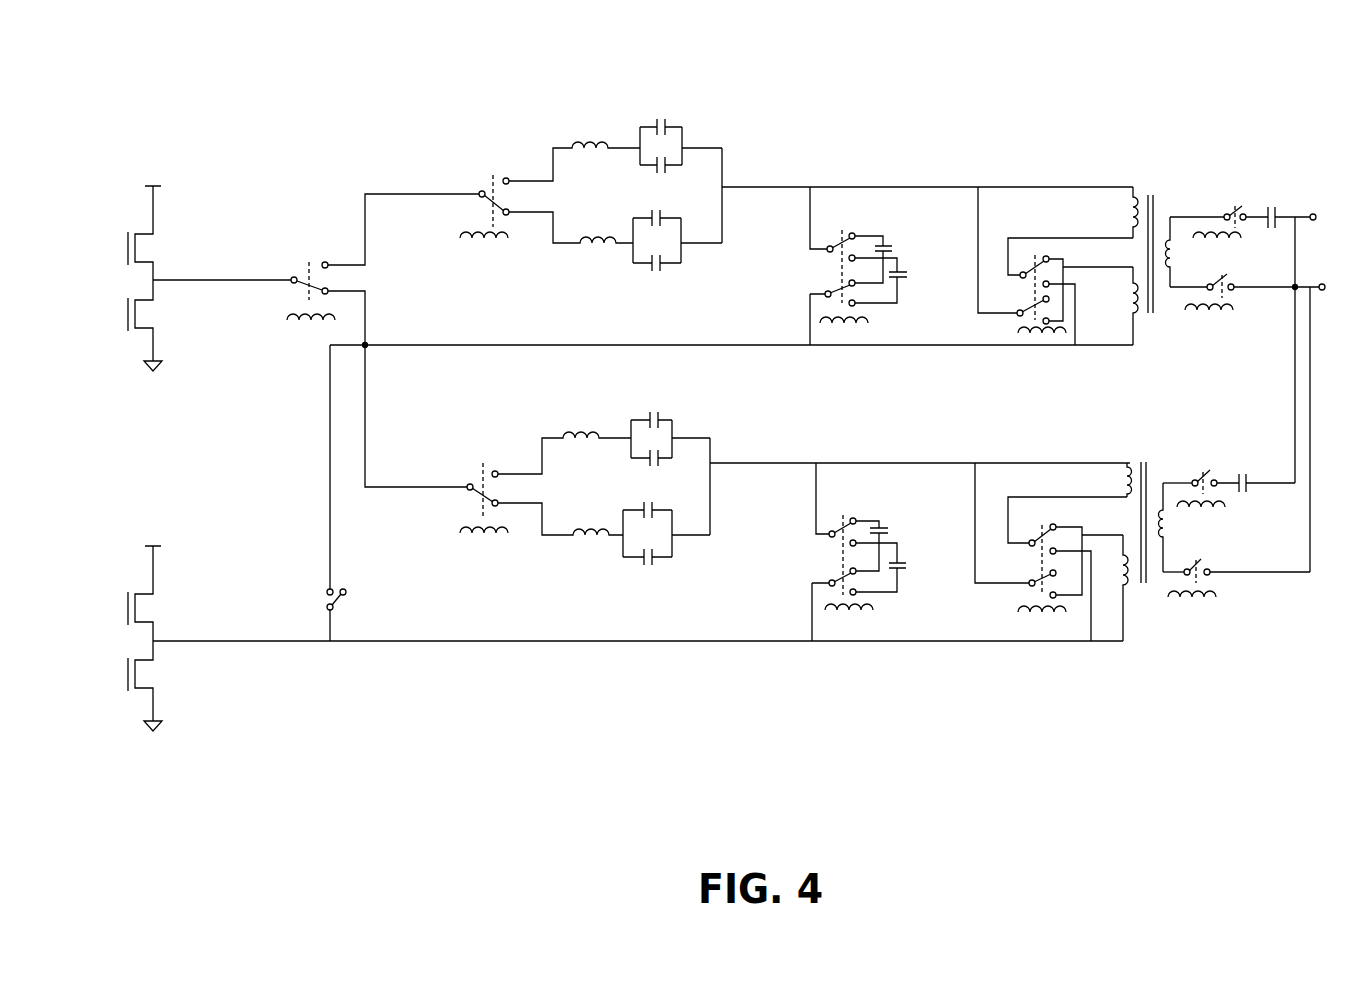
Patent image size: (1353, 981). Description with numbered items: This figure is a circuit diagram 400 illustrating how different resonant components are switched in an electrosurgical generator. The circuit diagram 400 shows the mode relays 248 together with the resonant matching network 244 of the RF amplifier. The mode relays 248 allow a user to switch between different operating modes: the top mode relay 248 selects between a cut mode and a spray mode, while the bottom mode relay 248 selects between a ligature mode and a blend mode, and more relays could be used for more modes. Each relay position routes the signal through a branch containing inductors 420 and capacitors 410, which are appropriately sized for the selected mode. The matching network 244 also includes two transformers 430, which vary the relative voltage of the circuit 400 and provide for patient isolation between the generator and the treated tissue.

The circuit diagram 400 is at (1041, 104).
The resonant matching network 244 is at (945, 163).
The mode relays 248 is at (482, 190).
The inductors 420 is at (588, 107).
The capacitors 410 is at (697, 107).
The transformers 430 is at (1147, 150).